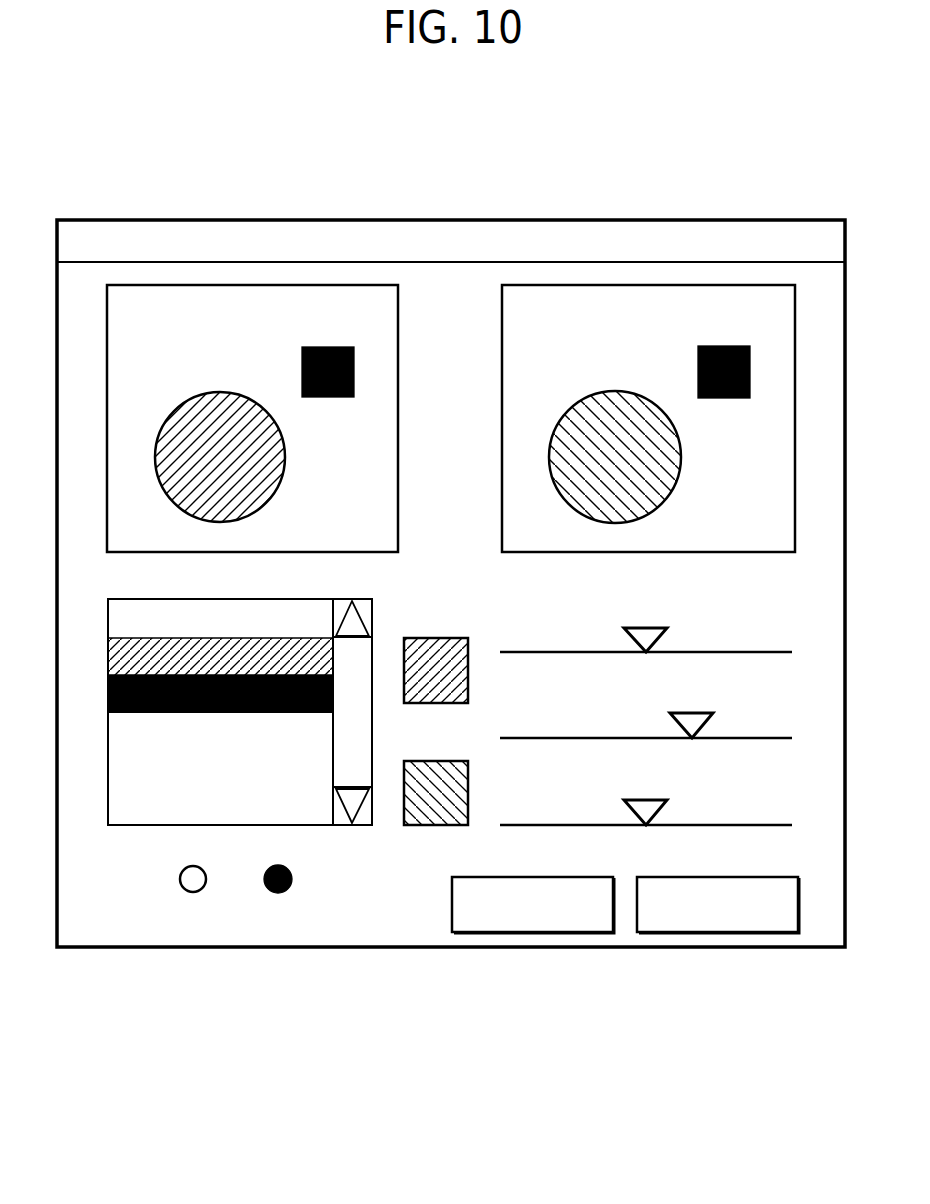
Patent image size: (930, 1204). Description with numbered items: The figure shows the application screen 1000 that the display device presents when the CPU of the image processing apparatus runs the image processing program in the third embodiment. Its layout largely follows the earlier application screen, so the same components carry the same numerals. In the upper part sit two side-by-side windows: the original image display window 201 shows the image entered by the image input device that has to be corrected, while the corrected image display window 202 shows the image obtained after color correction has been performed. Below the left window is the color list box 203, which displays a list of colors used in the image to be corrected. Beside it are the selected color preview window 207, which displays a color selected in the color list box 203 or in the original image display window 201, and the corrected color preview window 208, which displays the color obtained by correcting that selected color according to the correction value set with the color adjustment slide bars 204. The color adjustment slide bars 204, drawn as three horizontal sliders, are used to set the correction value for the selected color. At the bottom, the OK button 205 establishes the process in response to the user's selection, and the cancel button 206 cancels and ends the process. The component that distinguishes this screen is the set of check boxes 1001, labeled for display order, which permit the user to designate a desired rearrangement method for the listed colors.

The application screen 1000 is at (450, 220).
The original image display window 201 is at (398, 352).
The corrected image display window 202 is at (502, 467).
The color list box 203 is at (145, 599).
The color adjustment slide bars 204 is at (716, 651).
The OK button 205 is at (532, 933).
The cancel button 206 is at (718, 933).
The selected color preview window 207 is at (437, 637).
The corrected color preview window 208 is at (437, 760).
The check boxes 1001 is at (152, 893).